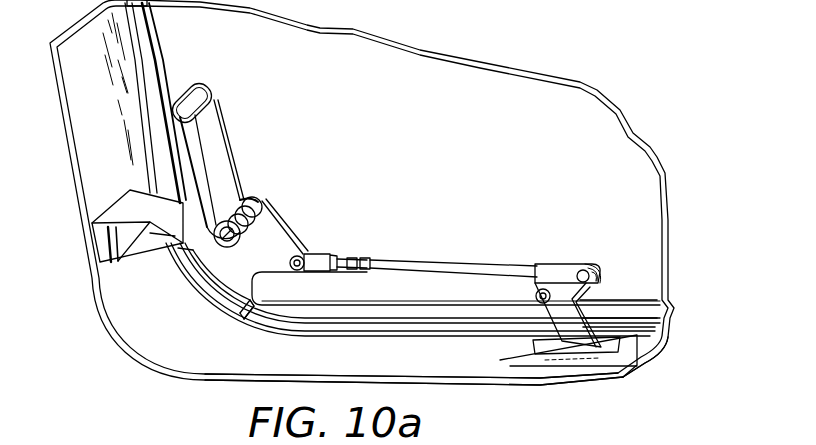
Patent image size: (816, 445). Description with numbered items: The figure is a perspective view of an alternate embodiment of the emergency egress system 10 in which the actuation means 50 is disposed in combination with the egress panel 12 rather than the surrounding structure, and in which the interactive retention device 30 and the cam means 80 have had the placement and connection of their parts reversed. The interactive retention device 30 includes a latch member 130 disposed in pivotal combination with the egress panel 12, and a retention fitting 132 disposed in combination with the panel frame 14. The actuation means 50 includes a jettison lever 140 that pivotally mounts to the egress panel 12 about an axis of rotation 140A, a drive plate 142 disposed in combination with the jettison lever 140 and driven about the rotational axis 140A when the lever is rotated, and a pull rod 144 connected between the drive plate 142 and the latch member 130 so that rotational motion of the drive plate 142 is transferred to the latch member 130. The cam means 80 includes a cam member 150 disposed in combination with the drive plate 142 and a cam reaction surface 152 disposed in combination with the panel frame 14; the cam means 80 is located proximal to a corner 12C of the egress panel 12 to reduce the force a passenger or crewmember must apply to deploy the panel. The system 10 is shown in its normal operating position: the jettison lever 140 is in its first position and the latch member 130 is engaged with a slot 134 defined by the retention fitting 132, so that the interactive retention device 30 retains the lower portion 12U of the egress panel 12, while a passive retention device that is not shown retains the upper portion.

The emergency egress system 10 is at (640, 103).
The egress panel 12 is at (505, 142).
The corner of the egress panel 12C is at (198, 316).
The lower portion of the egress panel 12U is at (660, 344).
The panel frame 14 is at (442, 359).
The interactive retention device 30 is at (558, 301).
The actuation means 50 is at (352, 178).
The cam means 80 is at (132, 295).
The latch member 130 is at (560, 293).
The retention fitting 132 is at (578, 364).
The slot 134 is at (525, 338).
The jettison lever 140 is at (224, 177).
The axis of rotation 140A is at (258, 298).
The drive plate 142 is at (268, 237).
The pull rod 144 is at (420, 238).
The cam member 150 is at (207, 290).
The cam reaction surface 152 is at (123, 269).